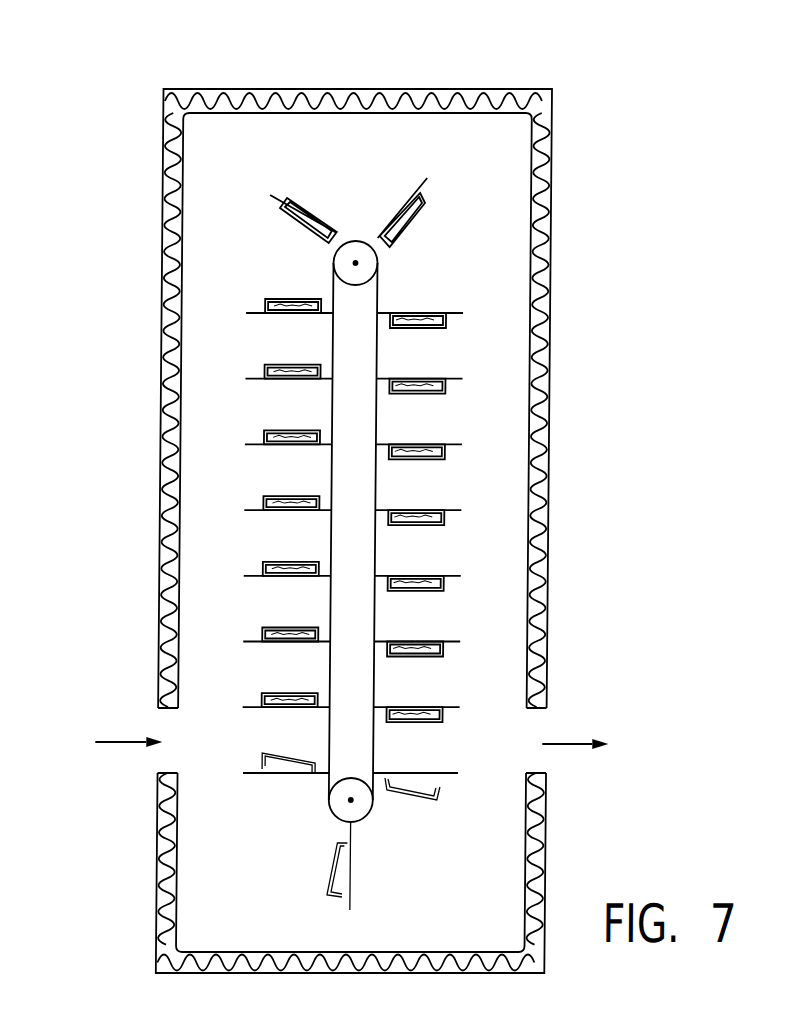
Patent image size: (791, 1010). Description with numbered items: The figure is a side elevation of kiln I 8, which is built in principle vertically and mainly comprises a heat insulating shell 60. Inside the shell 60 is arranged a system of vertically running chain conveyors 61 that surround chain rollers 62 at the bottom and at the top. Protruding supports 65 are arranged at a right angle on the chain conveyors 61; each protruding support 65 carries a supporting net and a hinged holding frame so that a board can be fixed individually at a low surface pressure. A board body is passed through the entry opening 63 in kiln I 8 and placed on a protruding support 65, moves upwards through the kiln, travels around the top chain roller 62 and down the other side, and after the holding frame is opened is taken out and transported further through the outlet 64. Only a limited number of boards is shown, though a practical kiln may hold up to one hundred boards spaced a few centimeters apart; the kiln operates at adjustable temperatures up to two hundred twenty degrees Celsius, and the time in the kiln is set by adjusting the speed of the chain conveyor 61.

The kiln I 8 is at (74, 77).
The heat insulating shell 60 is at (164, 157).
The chain conveyor 61 is at (335, 288).
The chain roller 62 is at (379, 265).
The entry opening 63 is at (124, 702).
The outlet 64 is at (588, 704).
The protruding support 65 is at (268, 367).